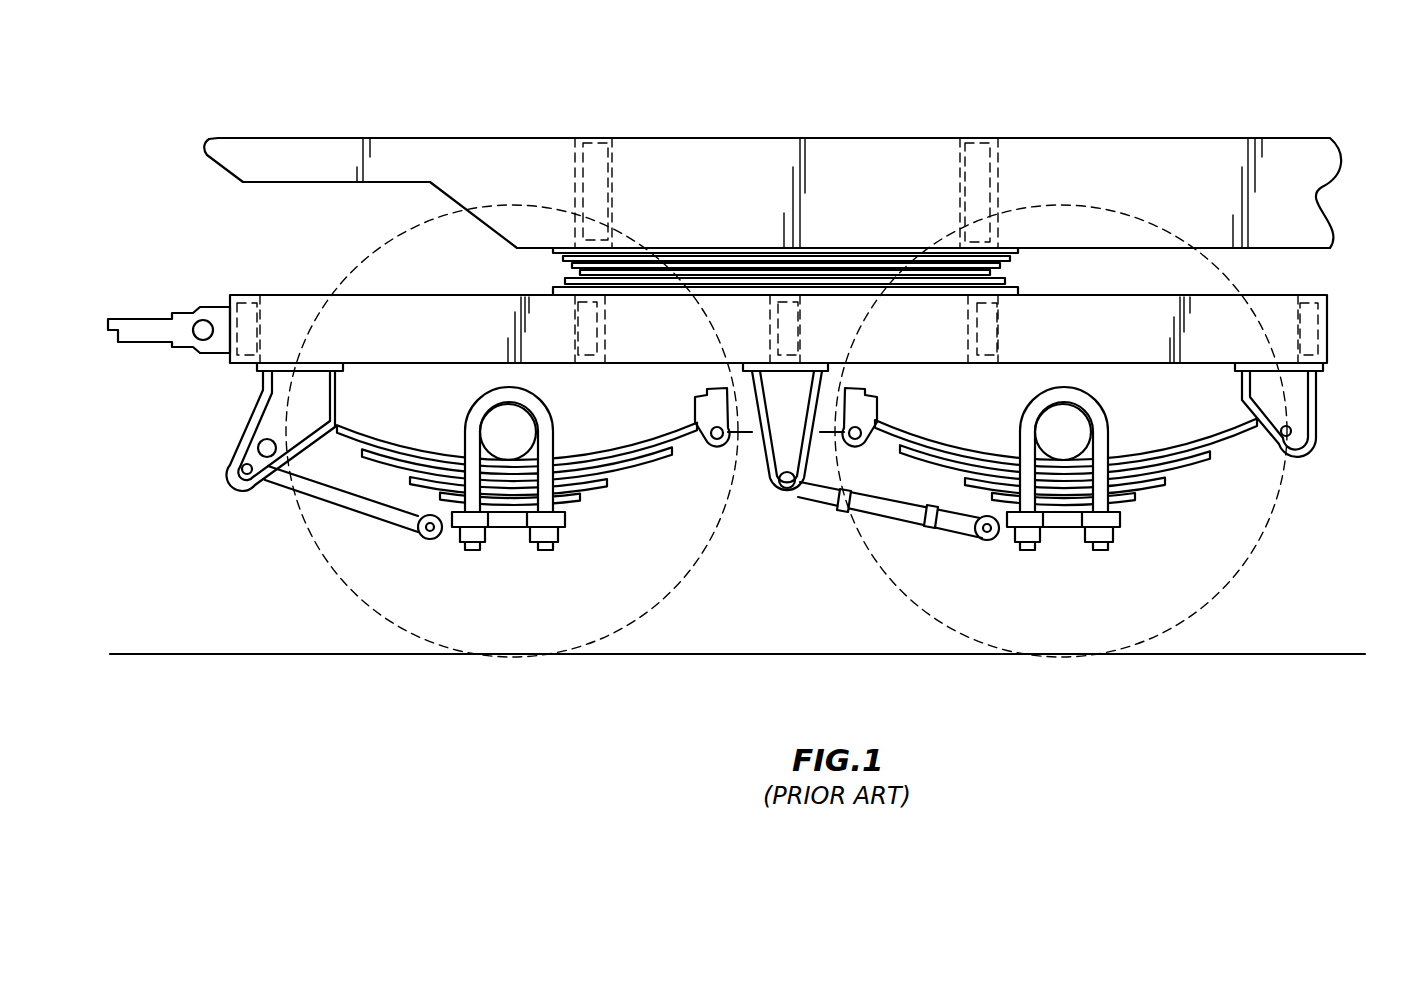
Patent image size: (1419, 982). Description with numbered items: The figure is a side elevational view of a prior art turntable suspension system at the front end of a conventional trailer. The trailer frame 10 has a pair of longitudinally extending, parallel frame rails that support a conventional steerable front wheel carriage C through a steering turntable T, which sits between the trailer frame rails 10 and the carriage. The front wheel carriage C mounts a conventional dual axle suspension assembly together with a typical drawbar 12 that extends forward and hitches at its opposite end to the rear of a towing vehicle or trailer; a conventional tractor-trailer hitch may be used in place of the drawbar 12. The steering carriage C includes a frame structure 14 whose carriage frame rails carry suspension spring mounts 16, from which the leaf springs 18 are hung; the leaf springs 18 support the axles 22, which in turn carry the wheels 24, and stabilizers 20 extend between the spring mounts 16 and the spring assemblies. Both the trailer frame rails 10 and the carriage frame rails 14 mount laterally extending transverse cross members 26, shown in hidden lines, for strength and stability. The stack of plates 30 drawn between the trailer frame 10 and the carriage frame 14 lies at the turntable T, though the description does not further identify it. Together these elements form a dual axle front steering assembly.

The trailer frame 10 is at (323, 158).
The drawbar 12 is at (127, 315).
The frame structure 14 is at (433, 348).
The suspension spring mounts 16 is at (273, 417).
The leaf springs 18 is at (628, 472).
The stabilizers 20 is at (367, 518).
The axles 22 is at (523, 420).
The wheels 24 is at (330, 567).
The transverse cross members 26 is at (603, 310).
The spacer stack 30 is at (553, 293).
The front wheel carriage C is at (327, 293).
The steering turntable T is at (1020, 273).